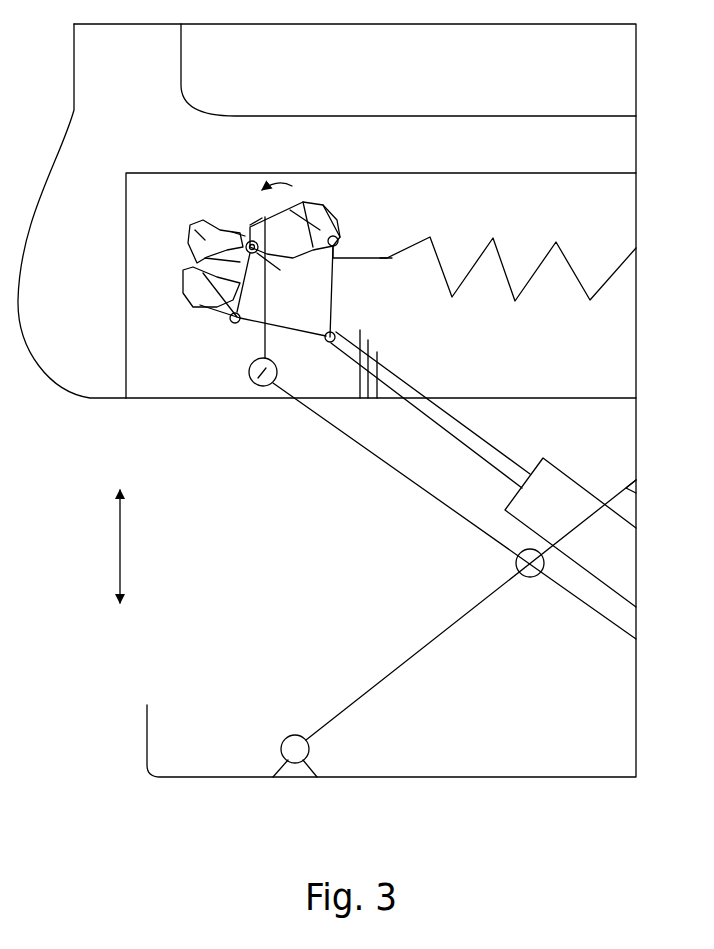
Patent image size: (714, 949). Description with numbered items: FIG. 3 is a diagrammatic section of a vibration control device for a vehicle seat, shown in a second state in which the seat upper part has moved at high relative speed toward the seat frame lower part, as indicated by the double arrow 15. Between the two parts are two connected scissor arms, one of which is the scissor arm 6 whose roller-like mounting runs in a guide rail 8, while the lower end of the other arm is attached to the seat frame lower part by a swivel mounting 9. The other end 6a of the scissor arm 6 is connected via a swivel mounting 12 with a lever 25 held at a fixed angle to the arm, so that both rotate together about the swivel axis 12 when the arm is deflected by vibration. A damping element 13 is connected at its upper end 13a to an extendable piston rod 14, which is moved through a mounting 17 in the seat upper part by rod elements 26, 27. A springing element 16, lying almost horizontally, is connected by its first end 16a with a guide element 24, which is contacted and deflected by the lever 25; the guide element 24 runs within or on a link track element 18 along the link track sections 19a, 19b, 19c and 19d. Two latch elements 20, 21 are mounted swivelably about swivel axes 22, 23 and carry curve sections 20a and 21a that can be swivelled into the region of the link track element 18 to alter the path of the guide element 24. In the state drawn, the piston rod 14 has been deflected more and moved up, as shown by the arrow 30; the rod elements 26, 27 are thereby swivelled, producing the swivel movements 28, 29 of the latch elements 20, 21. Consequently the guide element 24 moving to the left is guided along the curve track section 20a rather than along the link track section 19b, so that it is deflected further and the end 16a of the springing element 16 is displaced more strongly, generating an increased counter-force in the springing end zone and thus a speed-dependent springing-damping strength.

The scissor arm 6 is at (476, 523).
The other end of the scissor arm 6a is at (283, 393).
The guide rail 8 is at (637, 492).
The swivel mounting 9 is at (288, 738).
The swivel mounting 12 is at (258, 380).
The damping element 13 is at (622, 566).
The upper end of the damping element 13a is at (333, 330).
The piston rod 14 is at (496, 447).
The double arrow 15 is at (120, 540).
The springing element 16 is at (503, 258).
The first end of the springing element 16a is at (390, 257).
The mounting 17 is at (373, 421).
The link track element 18 is at (200, 228).
The link track section 19a is at (235, 230).
The link track section 19b is at (215, 260).
The link track section 19c is at (330, 215).
The link track section 19d is at (281, 263).
The locking lever 20 is at (225, 305).
The curve section 20a is at (205, 237).
The latch 21 is at (305, 215).
The curve section 21a is at (340, 237).
The swivel axis 22 is at (255, 220).
The swivel axis 23 is at (225, 292).
The guide element 24 is at (215, 278).
The lever 25 is at (240, 323).
The rod element 26 is at (277, 327).
The rod element 27 is at (335, 280).
The swivel 28 is at (197, 372).
The swivel 29 is at (286, 178).
The upward deflection of the piston rod 30 is at (352, 318).